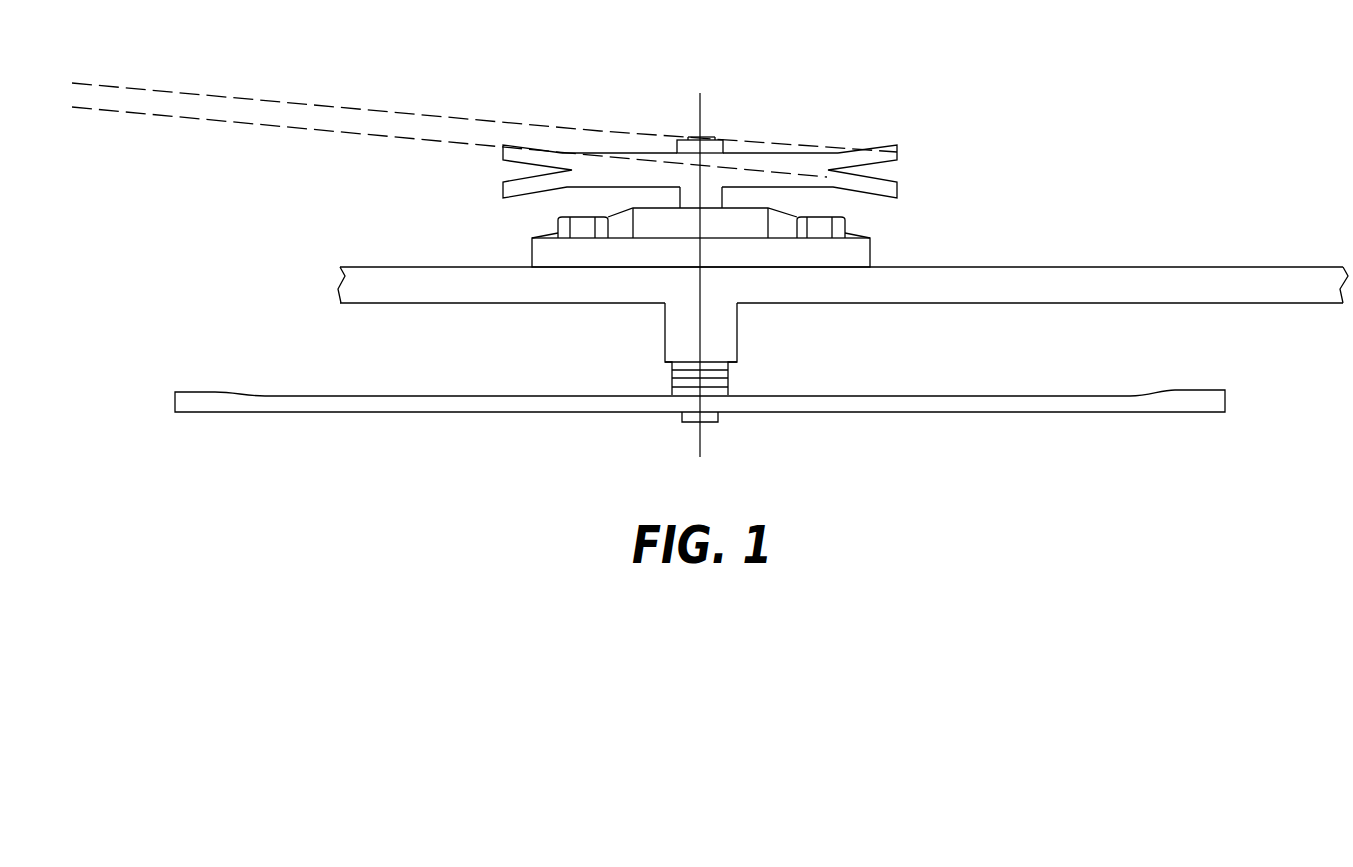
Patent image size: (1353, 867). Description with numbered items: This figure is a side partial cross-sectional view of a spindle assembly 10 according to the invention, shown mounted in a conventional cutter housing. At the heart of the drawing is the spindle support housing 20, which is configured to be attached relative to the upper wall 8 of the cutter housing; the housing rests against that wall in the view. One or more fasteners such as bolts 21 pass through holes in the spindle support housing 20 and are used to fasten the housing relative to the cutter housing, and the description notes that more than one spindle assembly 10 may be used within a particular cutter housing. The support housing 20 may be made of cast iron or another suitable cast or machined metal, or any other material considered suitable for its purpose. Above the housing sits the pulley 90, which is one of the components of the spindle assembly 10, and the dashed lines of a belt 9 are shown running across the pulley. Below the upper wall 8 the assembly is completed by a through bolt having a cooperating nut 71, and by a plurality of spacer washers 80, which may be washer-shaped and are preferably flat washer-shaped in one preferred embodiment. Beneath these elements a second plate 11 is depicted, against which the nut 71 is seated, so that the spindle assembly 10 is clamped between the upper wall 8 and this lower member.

The upper wall 8 is at (1123, 280).
The belt 9 is at (278, 110).
The spindle assembly 10 is at (837, 78).
The lower plate 11 is at (1017, 402).
The spindle support housing 20 is at (865, 250).
The bolts 21 is at (556, 218).
The nut 71 is at (688, 426).
The spacer washers 80 is at (740, 380).
The pulley 90 is at (608, 168).